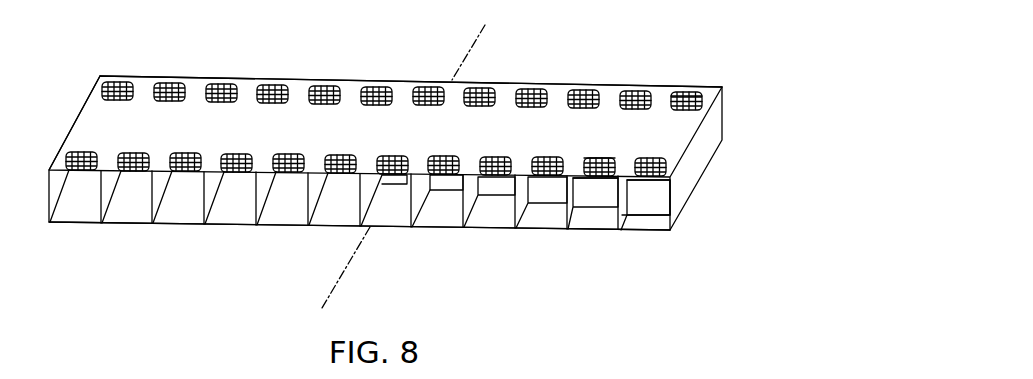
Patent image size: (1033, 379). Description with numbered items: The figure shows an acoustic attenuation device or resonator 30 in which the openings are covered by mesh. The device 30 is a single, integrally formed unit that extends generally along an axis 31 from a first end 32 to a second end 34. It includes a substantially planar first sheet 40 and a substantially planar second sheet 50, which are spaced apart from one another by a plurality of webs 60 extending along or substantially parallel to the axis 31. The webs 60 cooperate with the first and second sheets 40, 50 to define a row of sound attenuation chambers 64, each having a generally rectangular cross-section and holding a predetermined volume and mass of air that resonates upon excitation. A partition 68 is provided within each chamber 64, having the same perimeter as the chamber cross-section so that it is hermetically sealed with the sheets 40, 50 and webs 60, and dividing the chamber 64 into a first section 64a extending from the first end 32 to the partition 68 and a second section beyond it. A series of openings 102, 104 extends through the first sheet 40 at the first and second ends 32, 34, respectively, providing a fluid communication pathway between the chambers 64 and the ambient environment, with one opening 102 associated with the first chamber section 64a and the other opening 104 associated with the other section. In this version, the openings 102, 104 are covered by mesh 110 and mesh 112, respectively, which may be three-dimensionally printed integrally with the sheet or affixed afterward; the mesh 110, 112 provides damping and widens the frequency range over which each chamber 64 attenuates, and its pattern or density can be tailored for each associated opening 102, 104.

The acoustic attenuation device 30 is at (729, 73).
The axis 31 is at (465, 60).
The first end 32 is at (173, 240).
The second end 34 is at (344, 75).
The first sheet 40 is at (135, 146).
The second sheet 50 is at (287, 210).
The webs 60 is at (680, 182).
The sound attenuation chambers 64 is at (446, 205).
The first chamber section 64a is at (236, 204).
The partition 68 is at (647, 200).
The opening 102 is at (602, 179).
The opening 104 is at (689, 89).
The mesh 110 is at (596, 176).
The mesh 112 is at (680, 90).